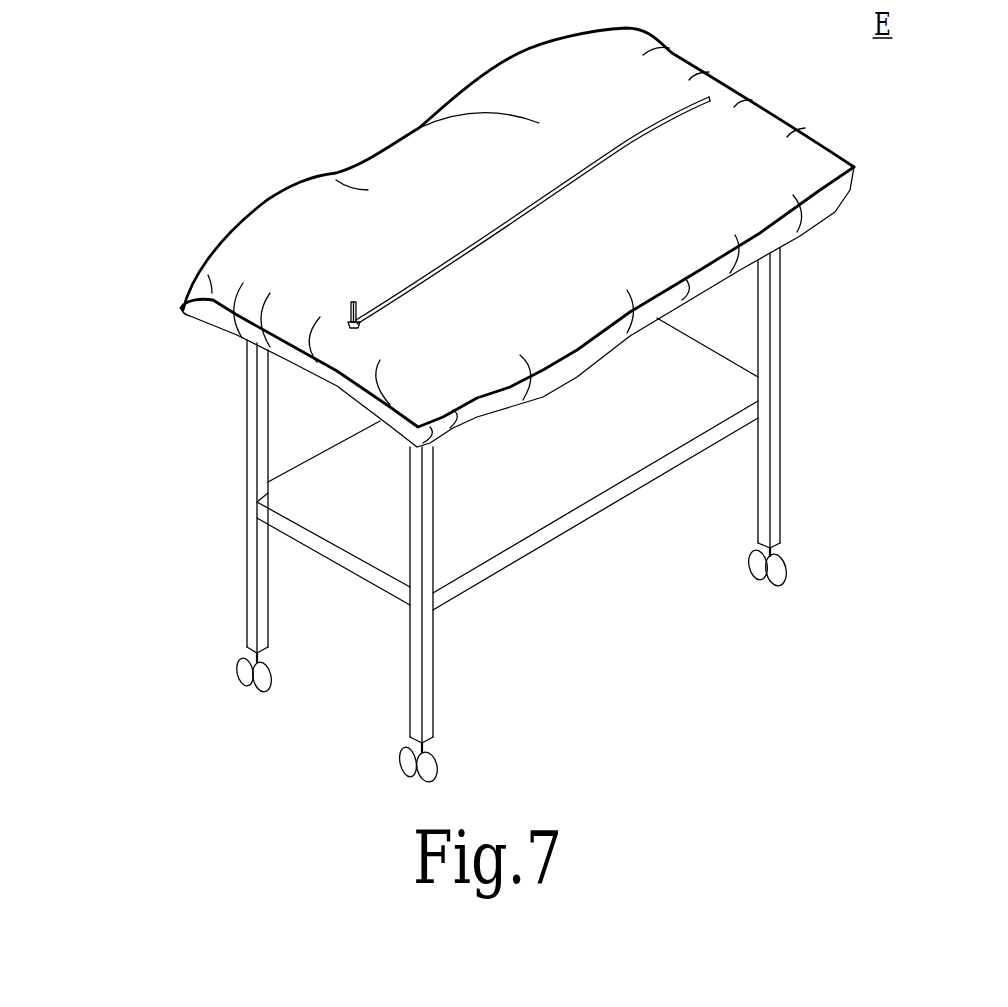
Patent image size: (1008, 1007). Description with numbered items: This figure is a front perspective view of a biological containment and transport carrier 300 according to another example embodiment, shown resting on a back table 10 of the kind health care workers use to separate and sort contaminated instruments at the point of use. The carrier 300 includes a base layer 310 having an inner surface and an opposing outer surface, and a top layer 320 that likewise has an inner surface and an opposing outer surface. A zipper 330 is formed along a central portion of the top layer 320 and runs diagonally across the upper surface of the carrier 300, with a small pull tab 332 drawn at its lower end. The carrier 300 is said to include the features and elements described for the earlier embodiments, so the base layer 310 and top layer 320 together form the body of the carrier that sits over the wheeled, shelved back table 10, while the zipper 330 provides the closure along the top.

The back table 10 is at (238, 474).
The biological containment and transport carrier 300 is at (443, 300).
The base layer 310 is at (191, 315).
The top layer 320 is at (221, 281).
The zipper 330 is at (499, 233).
The zipper pull 332 is at (351, 302).